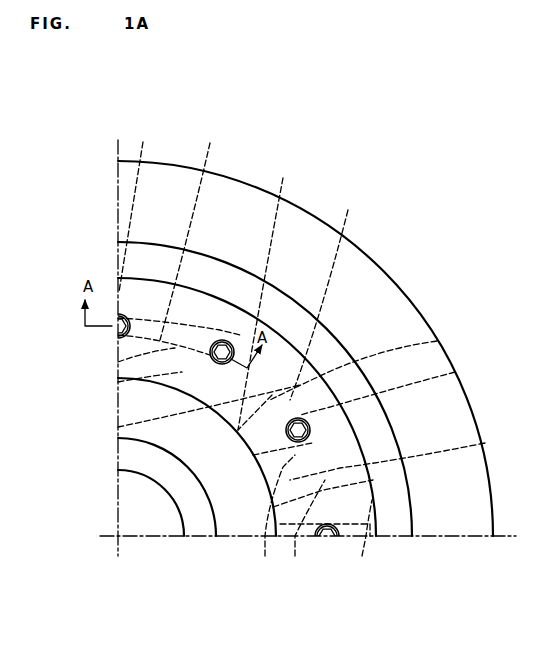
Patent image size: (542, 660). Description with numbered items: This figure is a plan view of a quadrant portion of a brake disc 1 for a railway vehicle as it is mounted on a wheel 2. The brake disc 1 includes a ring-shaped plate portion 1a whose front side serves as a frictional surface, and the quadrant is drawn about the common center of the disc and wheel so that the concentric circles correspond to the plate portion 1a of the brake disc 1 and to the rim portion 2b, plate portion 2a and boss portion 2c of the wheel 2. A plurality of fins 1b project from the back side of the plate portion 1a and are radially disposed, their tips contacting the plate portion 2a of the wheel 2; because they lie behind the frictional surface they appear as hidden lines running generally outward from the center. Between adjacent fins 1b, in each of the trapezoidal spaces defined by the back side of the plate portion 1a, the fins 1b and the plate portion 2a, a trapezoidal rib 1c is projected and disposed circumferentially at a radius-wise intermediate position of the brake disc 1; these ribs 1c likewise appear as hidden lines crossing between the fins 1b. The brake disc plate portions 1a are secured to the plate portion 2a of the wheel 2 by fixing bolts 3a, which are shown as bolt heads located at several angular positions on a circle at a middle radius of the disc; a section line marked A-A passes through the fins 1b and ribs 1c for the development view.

The brake disc 1 is at (316, 357).
The plate portion 1a is at (360, 513).
The fin 1b is at (503, 442).
The rib 1c is at (118, 363).
The wheel 2 is at (376, 246).
The plate portion 2a is at (244, 522).
The rim portion 2b is at (169, 184).
The boss portion 2c is at (200, 520).
The fixing bolt 3a is at (117, 328).